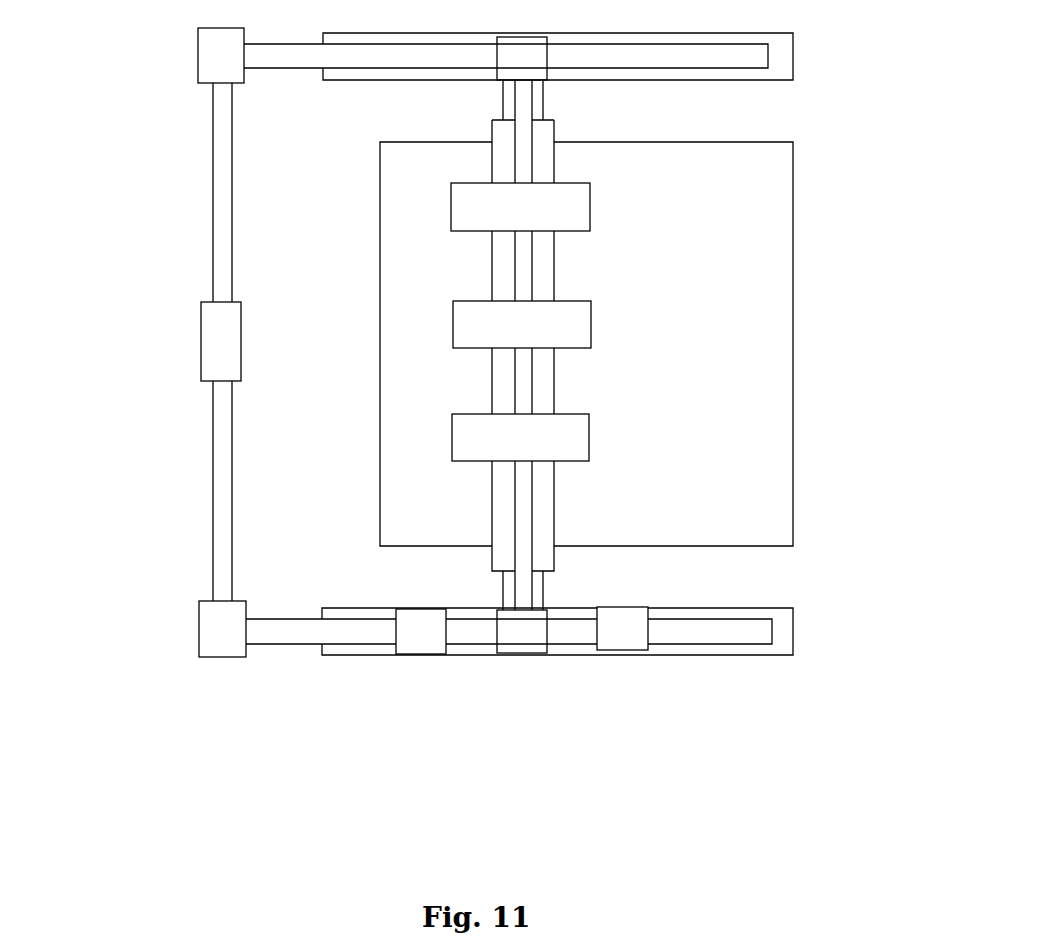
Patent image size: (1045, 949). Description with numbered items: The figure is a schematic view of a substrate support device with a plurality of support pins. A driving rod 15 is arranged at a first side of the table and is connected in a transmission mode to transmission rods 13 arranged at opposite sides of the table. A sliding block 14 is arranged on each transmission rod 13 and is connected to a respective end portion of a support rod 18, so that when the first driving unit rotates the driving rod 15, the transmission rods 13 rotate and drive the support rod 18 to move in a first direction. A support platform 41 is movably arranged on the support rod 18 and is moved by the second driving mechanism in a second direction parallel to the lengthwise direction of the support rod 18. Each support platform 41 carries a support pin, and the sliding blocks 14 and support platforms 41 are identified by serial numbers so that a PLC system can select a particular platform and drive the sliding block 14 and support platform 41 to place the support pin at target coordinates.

The driving rod 15 is at (208, 150).
The support platform 41 is at (587, 145).
The support rod 18 is at (535, 408).
The transmission rod 13 is at (267, 630).
The sliding block 14 is at (624, 633).